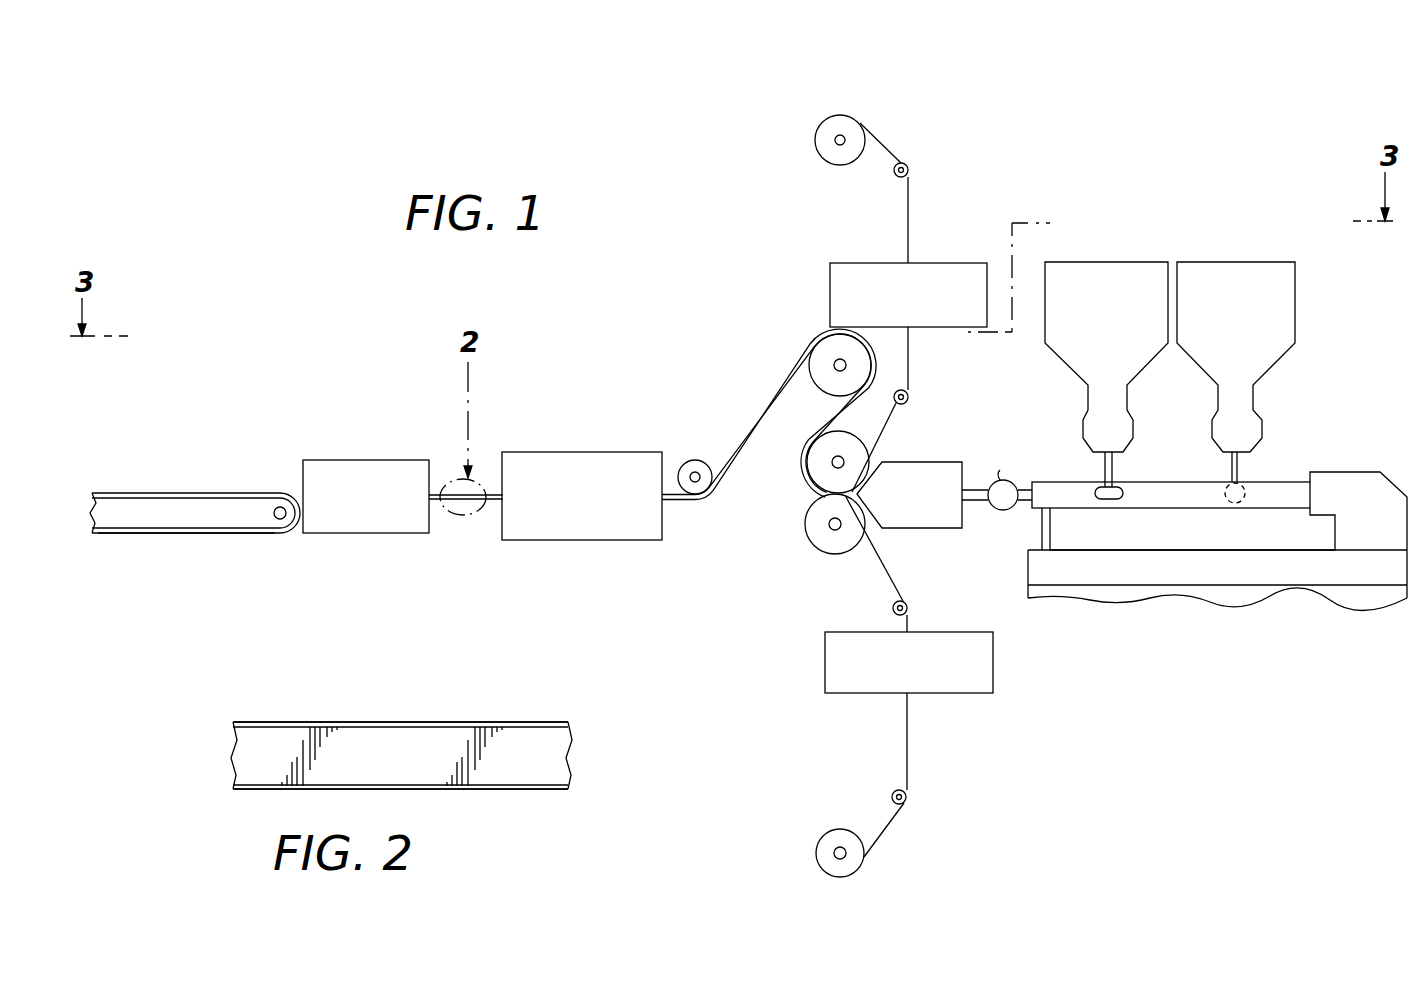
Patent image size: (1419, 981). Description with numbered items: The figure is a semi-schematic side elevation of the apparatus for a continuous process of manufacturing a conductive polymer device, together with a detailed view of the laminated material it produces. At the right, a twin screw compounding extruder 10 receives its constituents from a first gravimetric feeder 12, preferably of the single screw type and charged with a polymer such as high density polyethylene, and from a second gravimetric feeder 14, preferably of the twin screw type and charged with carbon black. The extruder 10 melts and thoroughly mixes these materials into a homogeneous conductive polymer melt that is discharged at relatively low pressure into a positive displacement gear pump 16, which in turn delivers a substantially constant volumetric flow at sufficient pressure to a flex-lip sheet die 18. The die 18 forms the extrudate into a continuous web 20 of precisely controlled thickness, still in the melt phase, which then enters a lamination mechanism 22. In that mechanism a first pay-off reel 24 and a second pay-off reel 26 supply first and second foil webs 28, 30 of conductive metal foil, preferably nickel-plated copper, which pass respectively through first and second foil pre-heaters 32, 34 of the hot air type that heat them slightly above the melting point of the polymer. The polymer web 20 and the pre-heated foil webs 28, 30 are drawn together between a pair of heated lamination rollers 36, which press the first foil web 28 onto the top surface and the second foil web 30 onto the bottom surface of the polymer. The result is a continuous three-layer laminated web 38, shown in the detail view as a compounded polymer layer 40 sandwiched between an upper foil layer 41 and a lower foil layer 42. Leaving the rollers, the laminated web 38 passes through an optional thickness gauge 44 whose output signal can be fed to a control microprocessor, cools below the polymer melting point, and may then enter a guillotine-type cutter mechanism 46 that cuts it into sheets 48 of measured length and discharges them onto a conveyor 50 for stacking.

In FIG. 1, the twin screw compounding extruder 10 is at (1384, 475).
In FIG. 1, the first gravimetric feeder 12 is at (1262, 262).
In FIG. 1, the second gravimetric feeder 14 is at (1139, 262).
In FIG. 1, the gear pump 16 is at (996, 509).
In FIG. 1, the flex-lip sheet die 18 is at (935, 462).
In FIG. 1, the compounded polymer web 20 is at (852, 497).
In FIG. 1, the lamination mechanism 22 is at (772, 221).
In FIG. 1, the first foil pay-off reel 24 is at (816, 137).
In FIG. 1, the second foil pay-off reel 26 is at (822, 836).
In FIG. 1, the first foil web 28 is at (910, 213).
In FIG. 1, the second foil web 30 is at (908, 751).
In FIG. 1, the first foil pre-heater 32 is at (830, 279).
In FIG. 1, the second foil pre-heater 34 is at (995, 674).
In FIG. 1, the lamination rollers 36 is at (853, 433).
In FIG. 1, the laminated web 38 is at (770, 400).
In FIG. 2, the laminated web 38 is at (514, 712).
In FIG. 2, the compounded polymer layer 40 is at (570, 755).
In FIG. 2, the upper foil layer 41 is at (572, 723).
In FIG. 2, the lower foil layer 42 is at (570, 787).
In FIG. 1, the thickness gauge 44 is at (605, 452).
In FIG. 1, the cutter mechanism 46 is at (377, 534).
In FIG. 1, the cut sheets 48 is at (218, 493).
In FIG. 1, the conveyor 50 is at (203, 534).